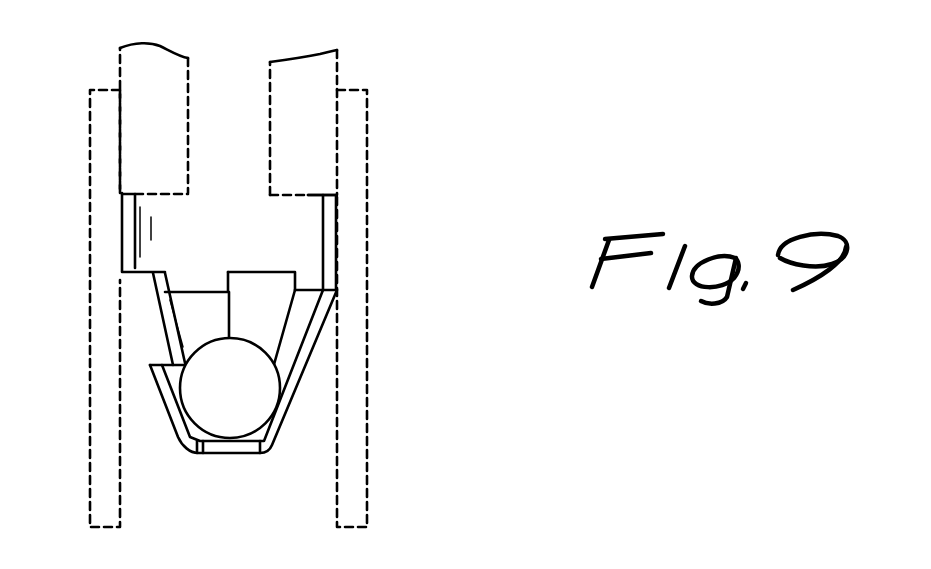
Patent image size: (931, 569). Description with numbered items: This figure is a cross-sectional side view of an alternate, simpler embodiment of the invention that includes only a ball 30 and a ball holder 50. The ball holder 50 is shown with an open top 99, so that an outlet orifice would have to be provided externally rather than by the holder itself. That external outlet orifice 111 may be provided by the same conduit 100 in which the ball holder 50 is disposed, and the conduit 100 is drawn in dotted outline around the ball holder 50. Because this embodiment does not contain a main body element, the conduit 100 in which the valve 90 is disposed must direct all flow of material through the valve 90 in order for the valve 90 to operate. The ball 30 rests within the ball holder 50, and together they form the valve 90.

The conduit 100 is at (323, 80).
The open top 99 is at (323, 216).
The ball holder 50 is at (333, 260).
The external outlet orifice 111 is at (272, 183).
The valve 90 is at (347, 340).
The ball 30 is at (254, 425).